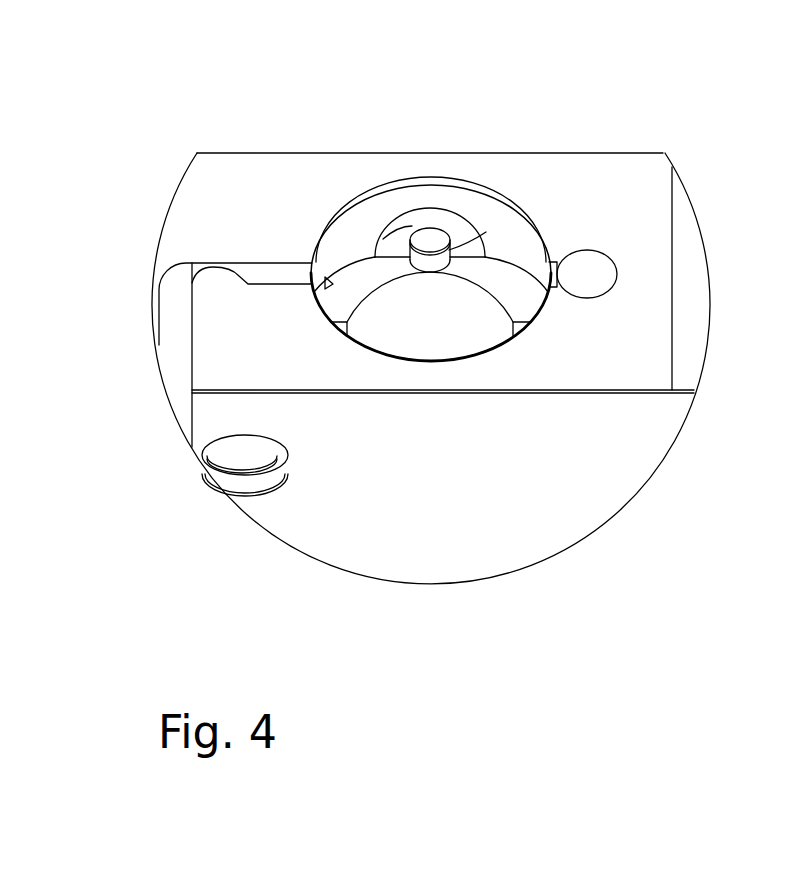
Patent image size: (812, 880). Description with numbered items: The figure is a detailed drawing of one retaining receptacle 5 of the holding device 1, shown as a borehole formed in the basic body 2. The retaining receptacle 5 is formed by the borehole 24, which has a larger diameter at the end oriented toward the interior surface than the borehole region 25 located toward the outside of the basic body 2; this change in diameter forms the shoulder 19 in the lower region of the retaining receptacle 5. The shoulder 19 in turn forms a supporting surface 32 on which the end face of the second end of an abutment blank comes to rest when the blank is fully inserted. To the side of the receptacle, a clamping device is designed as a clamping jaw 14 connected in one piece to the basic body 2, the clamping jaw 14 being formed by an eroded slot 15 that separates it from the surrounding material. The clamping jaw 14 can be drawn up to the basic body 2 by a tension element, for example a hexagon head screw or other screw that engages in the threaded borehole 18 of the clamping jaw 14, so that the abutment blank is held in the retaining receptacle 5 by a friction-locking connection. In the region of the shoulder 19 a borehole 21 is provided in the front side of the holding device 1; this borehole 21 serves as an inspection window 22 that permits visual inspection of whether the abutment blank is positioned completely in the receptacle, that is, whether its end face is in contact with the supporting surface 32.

The holding device 1 is at (737, 178).
The basic body 2 is at (642, 190).
The retaining receptacle 5 is at (425, 338).
The clamping jaw 14 is at (243, 364).
The eroded slot 15 is at (280, 272).
The threaded borehole 18 is at (240, 458).
The shoulder 19 is at (508, 282).
The borehole 21 is at (457, 227).
The inspection window 22 is at (408, 222).
The borehole 24 is at (334, 250).
The borehole region 25 is at (459, 336).
The supporting surface 32 is at (362, 285).